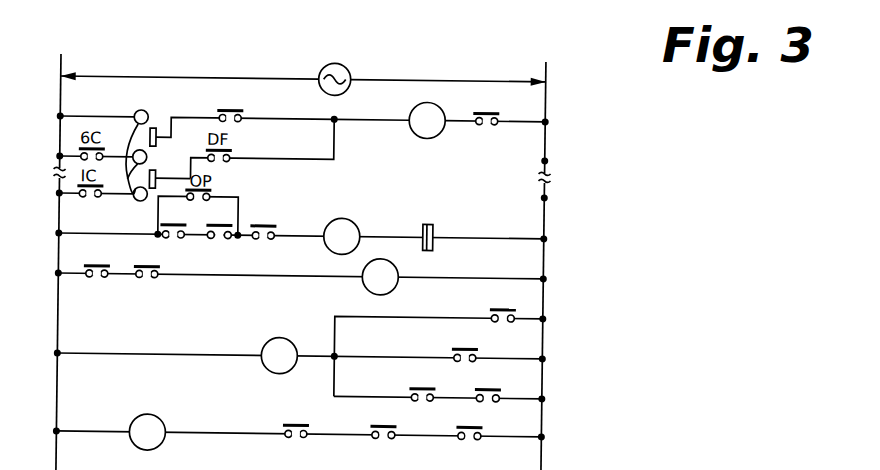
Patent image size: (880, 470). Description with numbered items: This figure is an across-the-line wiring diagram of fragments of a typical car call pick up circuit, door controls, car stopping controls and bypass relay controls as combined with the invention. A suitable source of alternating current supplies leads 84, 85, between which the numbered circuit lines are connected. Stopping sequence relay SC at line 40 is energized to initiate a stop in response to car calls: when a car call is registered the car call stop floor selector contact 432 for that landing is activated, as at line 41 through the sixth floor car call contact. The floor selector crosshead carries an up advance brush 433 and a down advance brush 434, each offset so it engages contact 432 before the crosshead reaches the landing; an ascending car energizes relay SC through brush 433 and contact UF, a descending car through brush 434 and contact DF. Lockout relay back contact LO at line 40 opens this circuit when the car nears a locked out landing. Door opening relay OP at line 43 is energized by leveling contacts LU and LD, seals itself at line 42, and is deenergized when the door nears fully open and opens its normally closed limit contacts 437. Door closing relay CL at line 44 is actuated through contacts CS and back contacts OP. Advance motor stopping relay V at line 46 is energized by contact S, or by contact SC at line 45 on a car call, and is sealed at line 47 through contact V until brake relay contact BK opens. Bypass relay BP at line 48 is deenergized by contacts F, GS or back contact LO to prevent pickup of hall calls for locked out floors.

The lead 84 is at (62, 107).
The lead 85 is at (546, 103).
The line 40 (stopping sequence relay circuit) 40 is at (364, 115).
The line 41 (car call contact circuit) 41 is at (563, 160).
The line 42 (relay OP seal circuit) 42 is at (563, 197).
The line 43 (door opening relay circuit) 43 is at (397, 231).
The line 44 (door closing relay circuit) 44 is at (361, 272).
The line 45 (car call pickup circuit) 45 is at (459, 343).
The line 46 (advance motor stopping relay circuit) 46 is at (394, 352).
The line 47 (relay V seal circuit) 47 is at (458, 388).
The line 48 (bypass relay circuit) 48 is at (380, 430).
The car call stop floor selector contact 432 is at (121, 159).
The up advance brush 433 is at (155, 127).
The down advance brush 434 is at (155, 169).
The limit contacts 437 is at (432, 220).